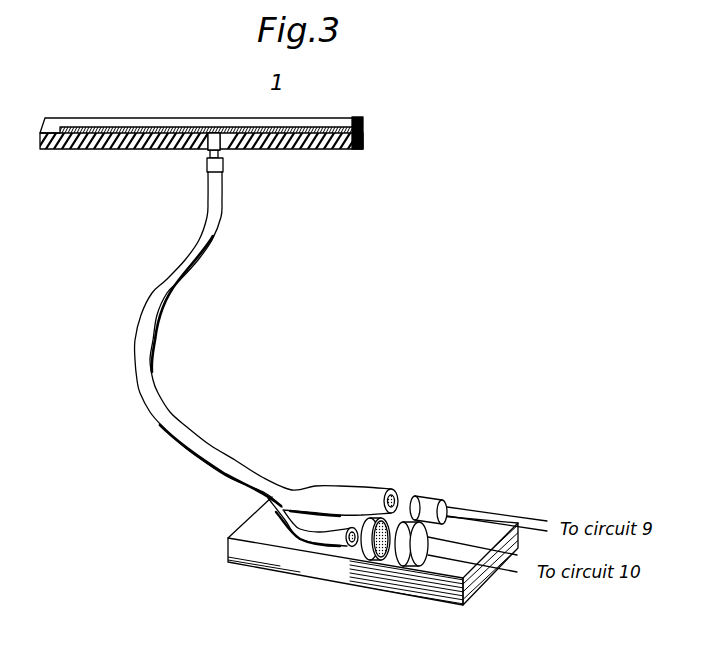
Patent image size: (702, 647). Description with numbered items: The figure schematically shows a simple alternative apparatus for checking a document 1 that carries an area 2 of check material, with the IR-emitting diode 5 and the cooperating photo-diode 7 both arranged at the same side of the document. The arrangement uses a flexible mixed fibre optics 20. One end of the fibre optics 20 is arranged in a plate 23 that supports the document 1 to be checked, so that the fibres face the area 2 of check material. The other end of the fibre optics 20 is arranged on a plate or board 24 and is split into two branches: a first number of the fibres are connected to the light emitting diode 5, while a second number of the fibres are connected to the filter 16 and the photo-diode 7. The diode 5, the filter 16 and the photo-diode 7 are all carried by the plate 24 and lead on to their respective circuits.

The document 1 is at (201, 109).
The area of check material 2 is at (214, 128).
The plate 23 is at (298, 150).
The flexible mixed fibre optics 20 is at (197, 258).
The plate or board 24 is at (306, 545).
The filter 16 is at (364, 549).
The photo-diode 7 is at (404, 551).
The IR-emitting diode 5 is at (478, 490).